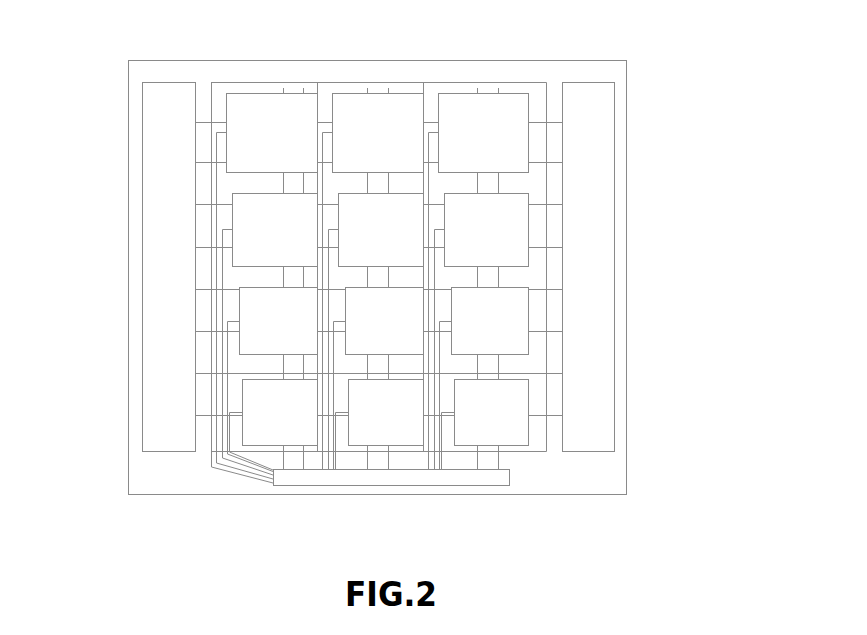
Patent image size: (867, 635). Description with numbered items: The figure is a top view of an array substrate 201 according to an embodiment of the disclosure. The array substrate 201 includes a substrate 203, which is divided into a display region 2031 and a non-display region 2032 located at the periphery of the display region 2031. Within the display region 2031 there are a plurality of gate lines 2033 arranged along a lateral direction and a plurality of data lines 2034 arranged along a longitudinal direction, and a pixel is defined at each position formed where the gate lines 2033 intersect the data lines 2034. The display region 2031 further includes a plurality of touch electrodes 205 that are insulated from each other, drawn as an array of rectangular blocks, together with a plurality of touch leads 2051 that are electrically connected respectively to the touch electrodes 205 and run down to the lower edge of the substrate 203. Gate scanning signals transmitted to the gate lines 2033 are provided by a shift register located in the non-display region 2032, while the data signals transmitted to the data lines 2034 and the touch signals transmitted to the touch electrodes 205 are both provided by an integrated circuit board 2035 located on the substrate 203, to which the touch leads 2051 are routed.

The array substrate 201 is at (110, 28).
The substrate 203 is at (603, 68).
The display region 2031 is at (535, 98).
The non-display region 2032 is at (170, 293).
The gate lines 2033 is at (548, 118).
The data lines 2034 is at (497, 178).
The integrated circuit board 2035 is at (421, 479).
The touch electrodes 205 is at (247, 103).
The touch leads 2051 is at (216, 190).